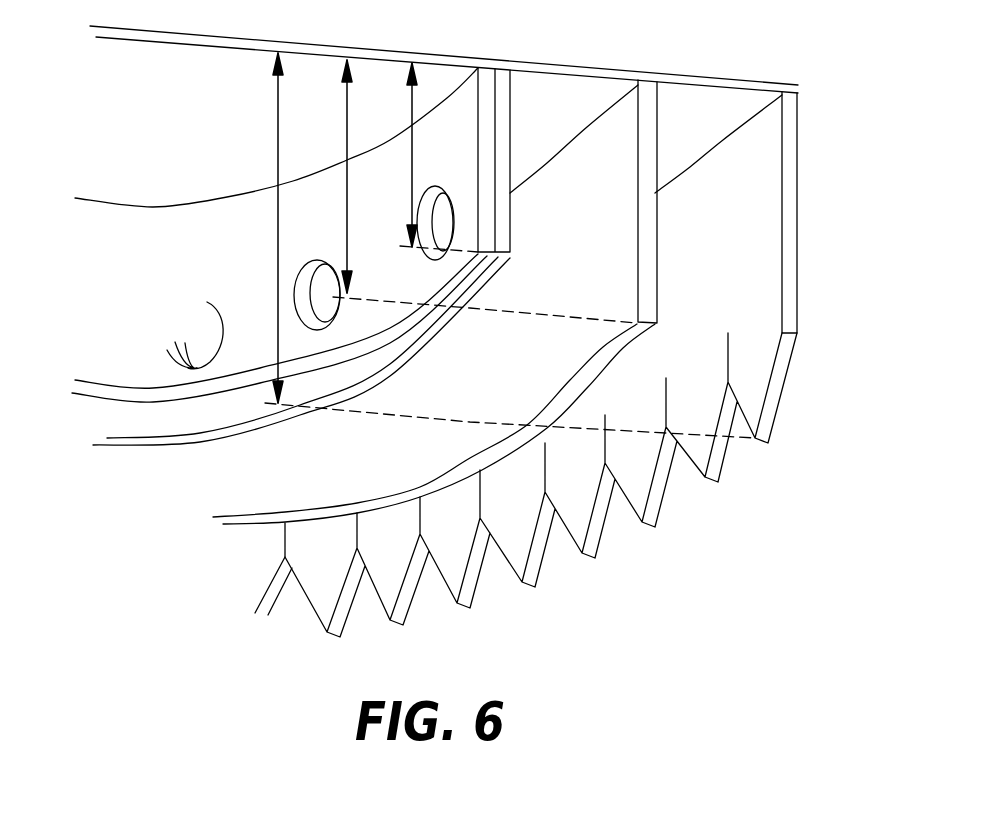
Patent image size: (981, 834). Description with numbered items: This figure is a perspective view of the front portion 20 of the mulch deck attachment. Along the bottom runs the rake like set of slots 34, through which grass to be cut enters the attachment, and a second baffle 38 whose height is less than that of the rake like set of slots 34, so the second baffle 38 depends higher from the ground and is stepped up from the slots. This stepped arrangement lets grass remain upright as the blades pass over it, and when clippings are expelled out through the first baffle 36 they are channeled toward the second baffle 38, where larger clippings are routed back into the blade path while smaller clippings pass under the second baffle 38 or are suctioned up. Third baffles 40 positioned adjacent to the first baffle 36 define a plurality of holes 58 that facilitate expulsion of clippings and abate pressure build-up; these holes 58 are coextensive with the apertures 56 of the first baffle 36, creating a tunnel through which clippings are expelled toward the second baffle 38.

The front portion 20 is at (802, 72).
The rake like set of slots 34 is at (752, 296).
The first baffle 36 is at (387, 247).
The second baffle 38 is at (574, 375).
The third baffles 40 is at (179, 433).
The apertures 56 is at (323, 310).
The holes 58 is at (427, 252).